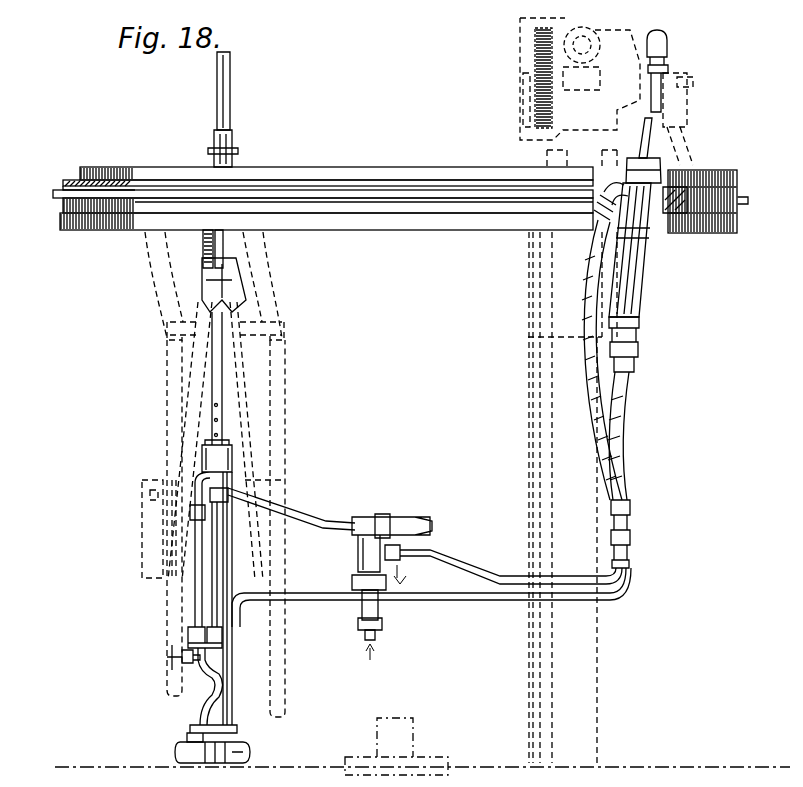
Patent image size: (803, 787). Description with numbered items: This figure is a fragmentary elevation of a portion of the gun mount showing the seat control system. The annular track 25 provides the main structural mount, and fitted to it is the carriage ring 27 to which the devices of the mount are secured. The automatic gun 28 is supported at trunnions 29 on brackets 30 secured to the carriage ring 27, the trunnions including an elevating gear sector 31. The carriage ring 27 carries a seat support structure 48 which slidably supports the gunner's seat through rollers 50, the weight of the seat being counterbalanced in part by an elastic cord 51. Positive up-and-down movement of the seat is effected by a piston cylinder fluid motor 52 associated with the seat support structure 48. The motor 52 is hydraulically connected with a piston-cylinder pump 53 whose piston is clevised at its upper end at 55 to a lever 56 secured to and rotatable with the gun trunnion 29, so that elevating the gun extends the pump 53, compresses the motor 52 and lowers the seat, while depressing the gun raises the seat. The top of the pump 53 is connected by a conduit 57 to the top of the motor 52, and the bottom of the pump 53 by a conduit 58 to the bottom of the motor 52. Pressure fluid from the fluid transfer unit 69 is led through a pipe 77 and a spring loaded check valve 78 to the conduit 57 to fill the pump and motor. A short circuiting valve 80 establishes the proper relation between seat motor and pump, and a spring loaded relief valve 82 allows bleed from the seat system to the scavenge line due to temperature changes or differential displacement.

The annular track 25 is at (676, 215).
The carriage ring 27 is at (700, 172).
The automatic gun 28 is at (535, 22).
The trunnions 29 is at (690, 80).
The brackets 30 is at (548, 154).
The elevating gear sector 31 is at (535, 44).
The seat support structure 48 is at (318, 355).
The rollers 50 is at (279, 497).
The elastic cord 51 is at (186, 424).
The piston cylinder fluid motor 52 is at (248, 681).
The piston-cylinder pump 53 is at (642, 290).
The clevis 55 is at (668, 46).
The lever 56 is at (646, 48).
The conduit 57 is at (585, 365).
The conduit 58 is at (622, 407).
The fluid transfer unit 69 is at (416, 724).
The pipe 77 is at (377, 635).
The spring loaded check valve 78 is at (380, 612).
The short circuiting valve 80 is at (195, 682).
The spring loaded relief valve 82 is at (403, 521).